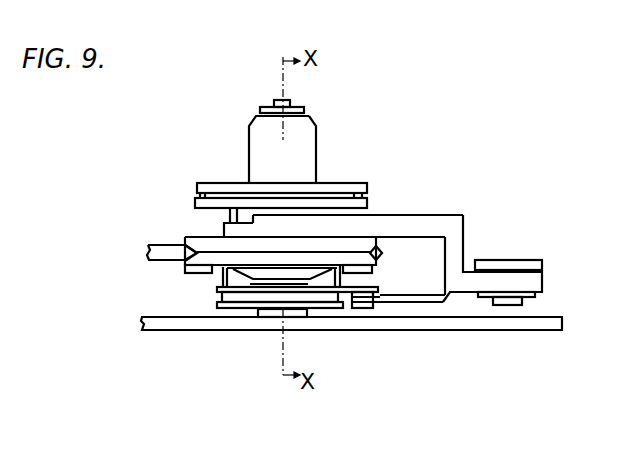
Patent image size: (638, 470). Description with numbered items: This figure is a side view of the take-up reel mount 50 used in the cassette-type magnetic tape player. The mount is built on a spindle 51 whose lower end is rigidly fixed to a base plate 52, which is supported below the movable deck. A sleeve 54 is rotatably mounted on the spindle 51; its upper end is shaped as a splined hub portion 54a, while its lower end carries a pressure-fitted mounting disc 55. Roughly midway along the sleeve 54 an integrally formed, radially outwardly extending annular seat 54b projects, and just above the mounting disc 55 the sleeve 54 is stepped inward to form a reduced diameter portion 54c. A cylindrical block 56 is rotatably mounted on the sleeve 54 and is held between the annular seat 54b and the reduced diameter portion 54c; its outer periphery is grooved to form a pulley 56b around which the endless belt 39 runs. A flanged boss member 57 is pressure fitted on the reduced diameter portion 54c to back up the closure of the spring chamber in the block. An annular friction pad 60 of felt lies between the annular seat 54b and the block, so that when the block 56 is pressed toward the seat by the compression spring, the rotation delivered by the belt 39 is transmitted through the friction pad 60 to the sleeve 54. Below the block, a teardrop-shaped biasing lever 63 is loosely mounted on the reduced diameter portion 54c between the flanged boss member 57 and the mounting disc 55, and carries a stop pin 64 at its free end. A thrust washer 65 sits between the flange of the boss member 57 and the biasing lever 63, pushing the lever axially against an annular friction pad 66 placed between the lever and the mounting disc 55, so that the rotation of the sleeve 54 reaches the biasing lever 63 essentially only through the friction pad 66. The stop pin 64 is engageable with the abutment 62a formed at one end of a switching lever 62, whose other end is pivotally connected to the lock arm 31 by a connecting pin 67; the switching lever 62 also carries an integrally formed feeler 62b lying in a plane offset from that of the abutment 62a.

The lock arm 31 is at (530, 258).
The endless belt 39 is at (158, 245).
The take-up reel mount 50 is at (296, 96).
The spindle 51 is at (277, 103).
The base plate 52 is at (163, 327).
The sleeve 54 is at (282, 157).
The splined hub portion 54a is at (308, 147).
The annular seat 54b is at (342, 184).
The reduced diameter portion 54c is at (278, 280).
The mounting disc 55 is at (303, 272).
The cylindrical block 56 is at (211, 220).
The pulley 56b is at (183, 265).
The flanged boss member 57 is at (312, 270).
The annular friction pad 60 is at (353, 200).
The switching lever 62 is at (470, 248).
The abutment 62a is at (428, 302).
The feeler 62b is at (420, 224).
The biasing lever 63 is at (262, 282).
The stop pin 64 is at (365, 300).
The thrust washer 65 is at (222, 272).
The annular friction pad 66 is at (240, 293).
The connecting pin 67 is at (505, 305).